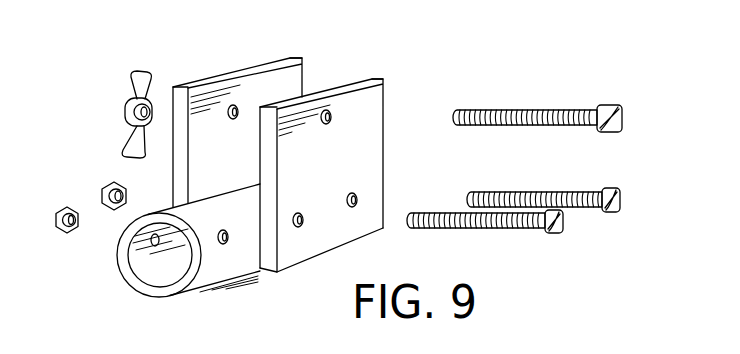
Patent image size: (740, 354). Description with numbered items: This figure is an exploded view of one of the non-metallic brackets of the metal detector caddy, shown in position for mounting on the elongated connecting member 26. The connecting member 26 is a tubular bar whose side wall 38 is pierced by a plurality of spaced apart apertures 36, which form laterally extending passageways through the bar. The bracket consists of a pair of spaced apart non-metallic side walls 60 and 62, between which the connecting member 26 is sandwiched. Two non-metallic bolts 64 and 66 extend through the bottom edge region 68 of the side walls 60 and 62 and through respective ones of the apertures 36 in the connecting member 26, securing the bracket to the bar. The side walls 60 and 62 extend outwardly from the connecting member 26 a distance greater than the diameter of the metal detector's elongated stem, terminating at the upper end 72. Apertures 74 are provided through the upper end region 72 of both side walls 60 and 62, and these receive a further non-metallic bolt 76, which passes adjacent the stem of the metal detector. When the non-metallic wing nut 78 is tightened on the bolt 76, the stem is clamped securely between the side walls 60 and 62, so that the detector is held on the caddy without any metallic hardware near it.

The elongated connecting member 26 is at (210, 282).
The spaced apart apertures 36 is at (231, 245).
The side wall 38 is at (150, 288).
The non-metallic side wall 60 is at (241, 70).
The non-metallic side wall 62 is at (367, 80).
The non-metallic bolt 64 is at (562, 226).
The non-metallic bolt 66 is at (621, 200).
The bottom edge region 68 is at (351, 232).
The upper end 72 is at (334, 87).
The apertures 74 is at (232, 108).
The non-metallic bolt 76 is at (567, 111).
The non-metallic wing nut 78 is at (129, 78).